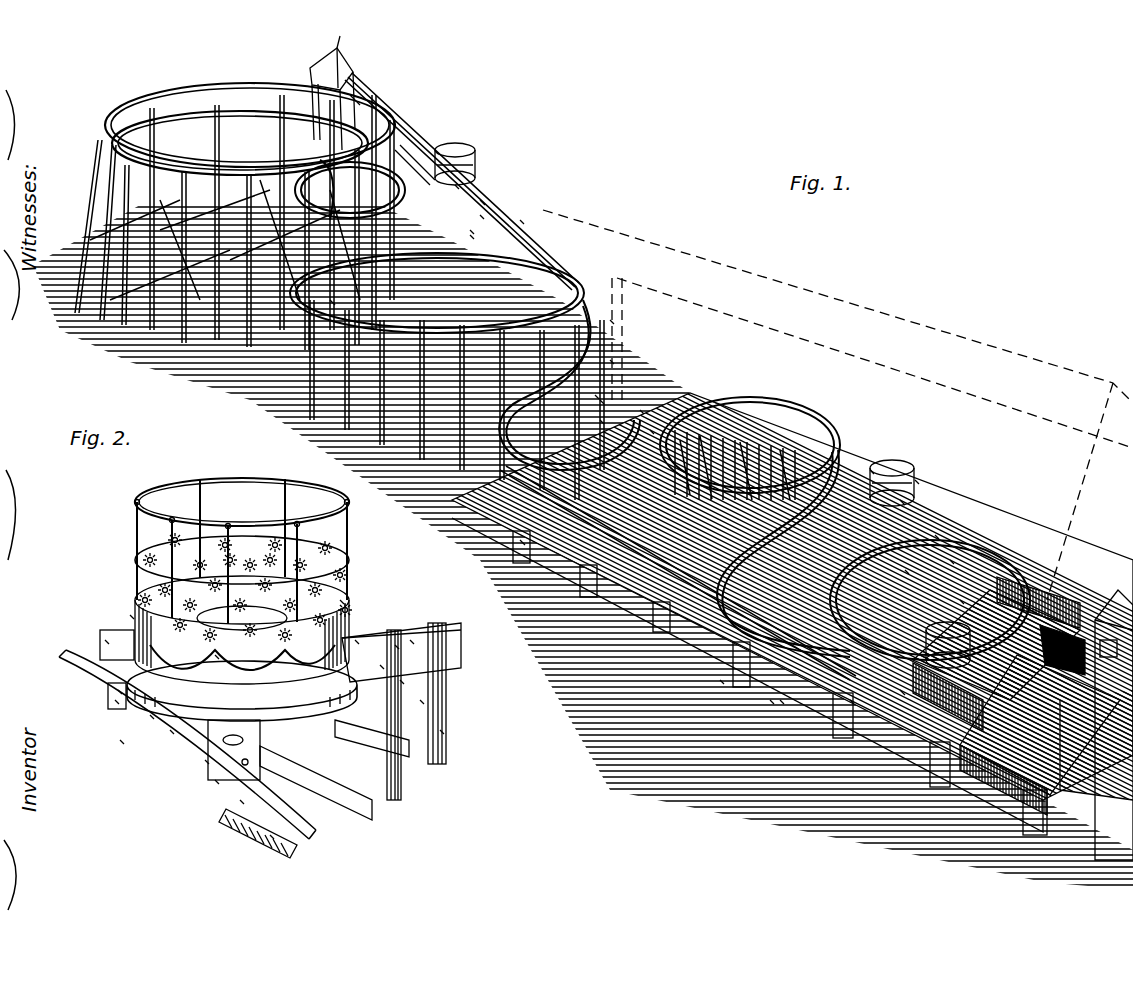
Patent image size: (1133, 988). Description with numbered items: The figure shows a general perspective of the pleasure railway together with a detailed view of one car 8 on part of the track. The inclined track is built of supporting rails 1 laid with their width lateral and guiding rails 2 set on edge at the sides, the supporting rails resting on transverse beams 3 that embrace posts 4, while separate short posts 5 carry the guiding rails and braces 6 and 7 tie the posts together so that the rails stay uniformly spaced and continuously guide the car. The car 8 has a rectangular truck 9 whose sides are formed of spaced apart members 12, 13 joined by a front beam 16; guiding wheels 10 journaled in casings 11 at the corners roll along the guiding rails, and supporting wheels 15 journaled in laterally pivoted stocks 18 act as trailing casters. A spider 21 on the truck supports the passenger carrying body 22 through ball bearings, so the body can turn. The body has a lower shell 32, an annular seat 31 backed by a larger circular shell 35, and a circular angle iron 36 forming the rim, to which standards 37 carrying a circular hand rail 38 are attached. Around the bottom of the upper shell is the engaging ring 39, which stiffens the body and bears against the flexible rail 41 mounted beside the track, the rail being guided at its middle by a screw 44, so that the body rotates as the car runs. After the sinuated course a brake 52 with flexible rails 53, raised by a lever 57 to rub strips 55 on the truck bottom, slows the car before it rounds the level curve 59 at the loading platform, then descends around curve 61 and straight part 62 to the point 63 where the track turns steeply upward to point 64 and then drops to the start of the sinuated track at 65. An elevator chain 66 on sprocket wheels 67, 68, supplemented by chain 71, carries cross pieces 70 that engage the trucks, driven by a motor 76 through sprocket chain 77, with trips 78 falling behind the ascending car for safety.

In FIG. 1, the supporting rails 1 is at (560, 300).
In FIG. 2, the supporting rails 1 is at (400, 682).
In FIG. 1, the guiding rails 2 is at (515, 255).
In FIG. 2, the guiding rails 2 is at (360, 640).
In FIG. 1, the transverse beams 3 is at (610, 320).
In FIG. 2, the transverse beams 3 is at (394, 760).
In FIG. 1, the posts 4 is at (600, 420).
In FIG. 2, the posts 4 is at (437, 700).
In FIG. 1, the short posts 5 is at (610, 360).
In FIG. 2, the short posts 5 is at (440, 730).
In FIG. 1, the braces 6 is at (640, 410).
In FIG. 2, the braces 6 is at (395, 645).
In FIG. 1, the braces 7 is at (650, 430).
In FIG. 2, the braces 7 is at (412, 641).
In FIG. 1, the car 8 is at (455, 185).
In FIG. 2, the car 8 is at (130, 616).
In FIG. 1, the truck 9 is at (935, 535).
In FIG. 2, the truck 9 is at (205, 760).
In FIG. 1, the guiding wheels 10 is at (850, 700).
In FIG. 2, the guiding wheels 10 is at (118, 690).
In FIG. 1, the casings 11 is at (905, 570).
In FIG. 2, the casings 11 is at (105, 640).
In FIG. 2, the spaced apart members 12 is at (170, 732).
In FIG. 2, the spaced apart members 13 is at (150, 717).
In FIG. 2, the supporting wheels 15 is at (115, 700).
In FIG. 2, the front beam 16 is at (310, 822).
In FIG. 2, the stocks 18 is at (120, 742).
In FIG. 2, the spider 21 is at (420, 702).
In FIG. 1, the passenger carrying body 22 is at (448, 146).
In FIG. 2, the passenger carrying body 22 is at (207, 646).
In FIG. 2, the annular seat 31 is at (320, 590).
In FIG. 2, the shell 32 is at (135, 590).
In FIG. 2, the larger circular shell 35 is at (110, 640).
In FIG. 2, the angle iron 36 is at (340, 602).
In FIG. 2, the standards 37 is at (135, 540).
In FIG. 2, the hand rail 38 is at (165, 495).
In FIG. 1, the engaging ring 39 is at (480, 200).
In FIG. 2, the engaging ring 39 is at (355, 642).
In FIG. 1, the rail 41 is at (145, 110).
In FIG. 1, the screw 44 is at (300, 362).
In FIG. 1, the brake 52 is at (770, 700).
In FIG. 1, the flexible rails 53 is at (720, 680).
In FIG. 2, the strips 55 is at (330, 790).
In FIG. 1, the lever 57 is at (780, 700).
In FIG. 1, the curve 59 is at (950, 590).
In FIG. 1, the curve 61 is at (950, 560).
In FIG. 1, the straight part 62 is at (855, 480).
In FIG. 1, the point of steep upward inclination 63 is at (520, 220).
In FIG. 1, the upper point 64 is at (356, 80).
In FIG. 1, the beginning of the sinuated track 65 is at (205, 92).
In FIG. 1, the sprocket chain 66 is at (470, 230).
In FIG. 1, the sprocket wheel 67 is at (595, 395).
In FIG. 1, the sprocket wheel 68 is at (358, 99).
In FIG. 1, the cross pieces 70 is at (400, 160).
In FIG. 1, the sprocket chain 71 is at (600, 400).
In FIG. 1, the motor 76 is at (330, 118).
In FIG. 1, the sprocket chain 77 is at (345, 62).
In FIG. 1, the trips 78 is at (470, 235).